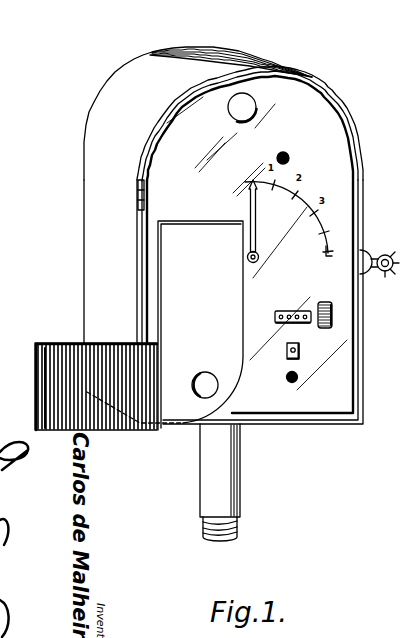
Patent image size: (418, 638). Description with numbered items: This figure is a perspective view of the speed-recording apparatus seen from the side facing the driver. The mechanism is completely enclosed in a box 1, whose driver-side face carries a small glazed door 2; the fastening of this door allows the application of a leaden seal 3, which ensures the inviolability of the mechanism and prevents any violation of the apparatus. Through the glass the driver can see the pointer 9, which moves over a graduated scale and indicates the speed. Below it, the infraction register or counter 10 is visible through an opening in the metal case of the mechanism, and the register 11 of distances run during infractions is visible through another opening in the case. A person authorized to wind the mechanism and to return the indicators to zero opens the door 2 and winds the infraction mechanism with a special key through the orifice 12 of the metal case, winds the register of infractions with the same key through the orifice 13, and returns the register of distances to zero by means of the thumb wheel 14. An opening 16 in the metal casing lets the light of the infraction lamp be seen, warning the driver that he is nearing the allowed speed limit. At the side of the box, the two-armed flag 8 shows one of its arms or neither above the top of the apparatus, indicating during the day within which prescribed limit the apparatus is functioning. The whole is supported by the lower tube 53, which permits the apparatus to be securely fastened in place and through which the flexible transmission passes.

The box 1 is at (84, 229).
The glazed door 2 is at (337, 148).
The leaden seal 3 is at (378, 260).
The flag 8 is at (55, 345).
The pointer 9 is at (256, 227).
The infraction register 10 is at (299, 358).
The register of distances run during infractions 11 is at (304, 323).
The orifice 12 is at (284, 155).
The orifice 13 is at (296, 382).
The thumb wheel 14 is at (333, 315).
The opening 16 is at (246, 105).
The lower tube 53 is at (236, 493).